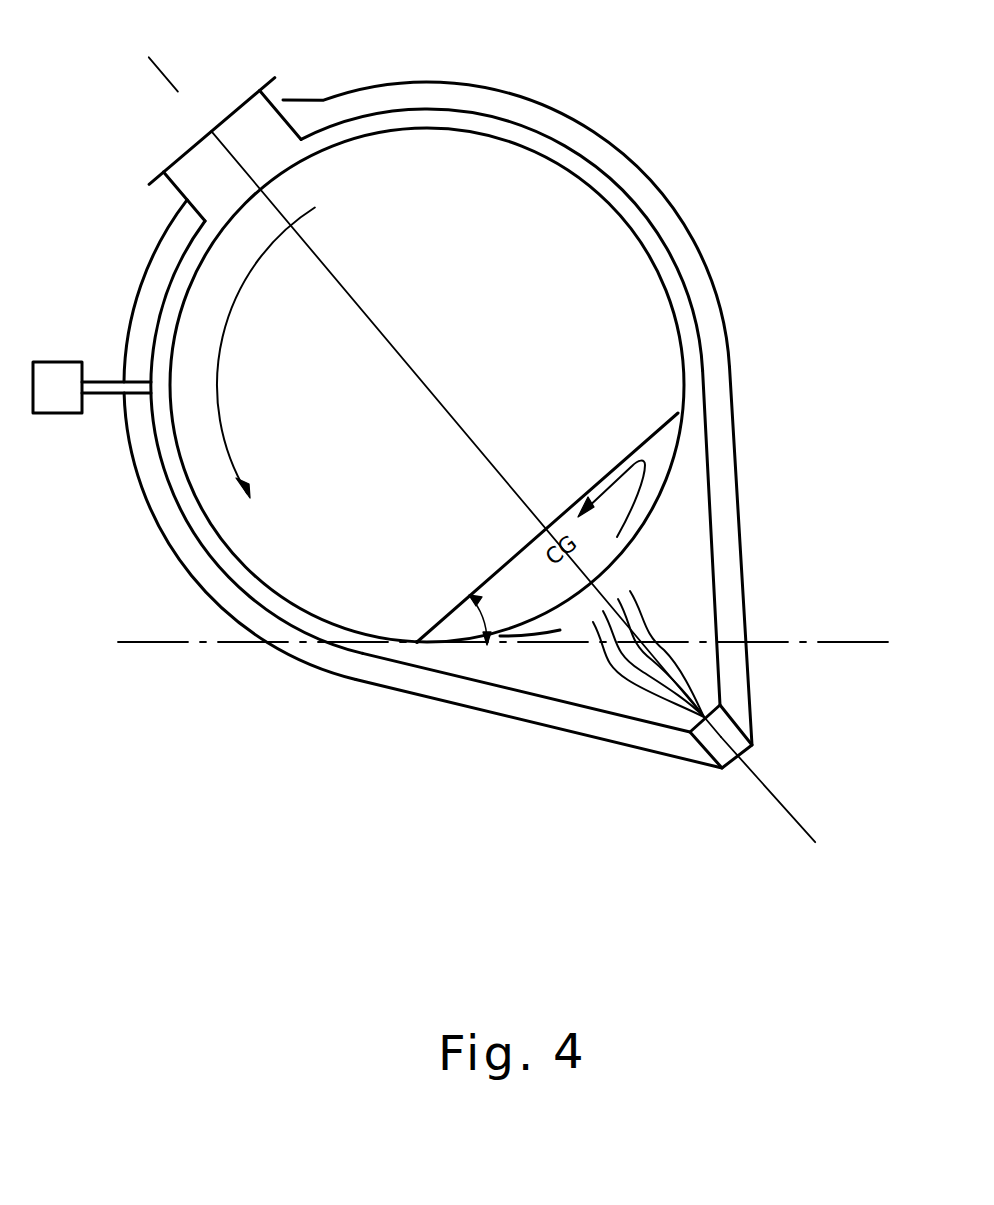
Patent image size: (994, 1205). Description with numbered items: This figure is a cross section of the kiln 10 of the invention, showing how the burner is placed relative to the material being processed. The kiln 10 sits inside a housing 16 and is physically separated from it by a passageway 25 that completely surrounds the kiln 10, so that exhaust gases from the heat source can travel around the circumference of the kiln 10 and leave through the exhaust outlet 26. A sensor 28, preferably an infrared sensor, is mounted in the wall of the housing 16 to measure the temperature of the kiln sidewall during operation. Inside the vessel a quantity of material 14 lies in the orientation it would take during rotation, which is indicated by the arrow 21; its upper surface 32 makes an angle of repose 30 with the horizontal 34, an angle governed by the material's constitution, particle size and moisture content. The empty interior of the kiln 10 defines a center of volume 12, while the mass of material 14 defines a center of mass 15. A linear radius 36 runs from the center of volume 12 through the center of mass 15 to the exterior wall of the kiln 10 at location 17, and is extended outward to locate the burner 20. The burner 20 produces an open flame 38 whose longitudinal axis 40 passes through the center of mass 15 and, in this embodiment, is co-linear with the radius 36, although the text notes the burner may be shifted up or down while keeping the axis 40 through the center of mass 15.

The kiln 10 is at (647, 250).
The center of volume 12 is at (432, 373).
The material 14 is at (530, 612).
The center of mass 15 is at (560, 548).
The housing 16 is at (487, 102).
The location 17 is at (597, 580).
The burner 20 is at (733, 742).
The arrow 21 is at (228, 333).
The passageway 25 is at (688, 343).
The exhaust outlet 26 is at (283, 100).
The sensor 28 is at (75, 362).
The angle of repose 30 is at (496, 601).
The upper surface 32 is at (443, 613).
The horizontal 34 is at (868, 641).
The linear radius 36 is at (500, 472).
The flame 38 is at (673, 628).
The longitudinal axis 40 is at (755, 773).